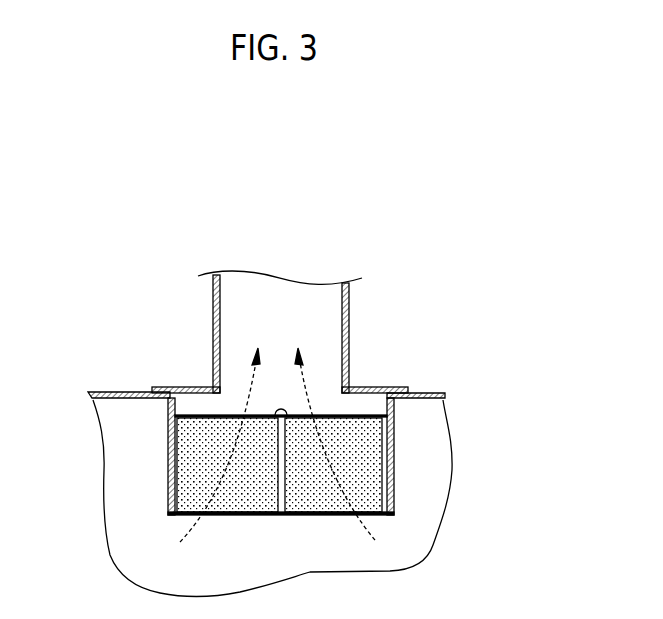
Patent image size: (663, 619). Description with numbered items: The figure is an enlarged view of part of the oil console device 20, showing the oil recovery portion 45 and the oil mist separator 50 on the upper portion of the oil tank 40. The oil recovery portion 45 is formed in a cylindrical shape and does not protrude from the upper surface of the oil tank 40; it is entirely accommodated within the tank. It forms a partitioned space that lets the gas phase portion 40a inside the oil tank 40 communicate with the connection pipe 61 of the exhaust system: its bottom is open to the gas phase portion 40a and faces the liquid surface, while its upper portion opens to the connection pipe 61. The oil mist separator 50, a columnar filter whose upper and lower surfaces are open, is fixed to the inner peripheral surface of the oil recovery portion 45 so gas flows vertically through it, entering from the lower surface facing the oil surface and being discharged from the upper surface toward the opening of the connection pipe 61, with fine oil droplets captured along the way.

The oil console device 20 is at (420, 273).
The connection pipe 61 is at (349, 337).
The oil tank 40 is at (128, 392).
The gas phase portion 40a is at (442, 487).
The oil recovery portion 45 is at (394, 418).
The oil mist separator 50 is at (190, 451).